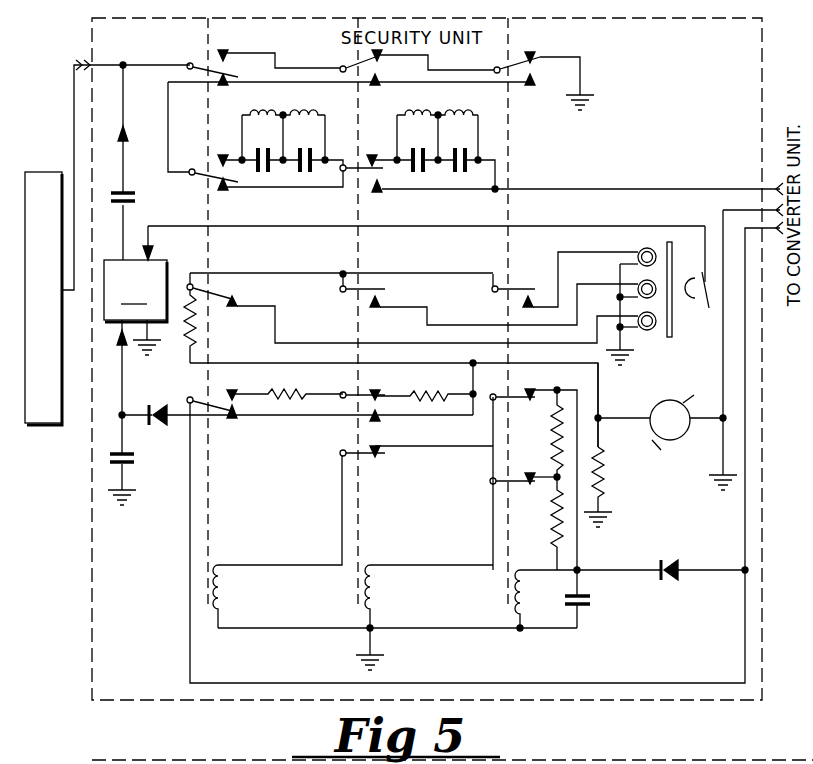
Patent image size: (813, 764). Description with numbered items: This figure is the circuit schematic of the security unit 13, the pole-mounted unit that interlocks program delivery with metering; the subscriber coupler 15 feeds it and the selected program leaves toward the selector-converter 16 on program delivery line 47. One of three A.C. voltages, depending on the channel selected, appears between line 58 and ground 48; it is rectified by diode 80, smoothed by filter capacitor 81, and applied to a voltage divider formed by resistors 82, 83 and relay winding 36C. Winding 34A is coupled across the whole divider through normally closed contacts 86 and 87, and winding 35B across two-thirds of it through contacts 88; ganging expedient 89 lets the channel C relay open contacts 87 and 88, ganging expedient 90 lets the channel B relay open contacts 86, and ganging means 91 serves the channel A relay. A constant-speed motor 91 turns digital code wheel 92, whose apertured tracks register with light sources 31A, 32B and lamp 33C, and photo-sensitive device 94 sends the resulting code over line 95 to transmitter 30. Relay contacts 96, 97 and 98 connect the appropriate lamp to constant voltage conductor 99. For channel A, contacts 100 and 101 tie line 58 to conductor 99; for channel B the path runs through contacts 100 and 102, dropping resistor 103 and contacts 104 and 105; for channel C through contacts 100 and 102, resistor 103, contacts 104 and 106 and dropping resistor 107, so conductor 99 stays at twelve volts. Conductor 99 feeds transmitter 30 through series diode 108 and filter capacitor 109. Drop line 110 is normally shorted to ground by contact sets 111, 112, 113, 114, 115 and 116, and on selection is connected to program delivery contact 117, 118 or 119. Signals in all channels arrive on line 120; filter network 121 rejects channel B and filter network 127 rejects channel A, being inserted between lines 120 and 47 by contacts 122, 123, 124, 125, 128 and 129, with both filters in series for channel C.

The security unit 13 is at (92, 41).
The coupler 15 is at (54, 424).
The selector-converter 16 is at (185, 760).
The transmitter 30 is at (135, 291).
The light source 31A is at (655, 330).
The light source 32B is at (620, 271).
The lamp 33C is at (640, 250).
The relay winding 34A is at (228, 590).
The relay winding 35B is at (380, 590).
The relay winding 36C is at (530, 592).
The program delivery line 47 is at (640, 189).
The ground 48 is at (585, 97).
The line 58 is at (190, 630).
The diode 80 is at (658, 577).
The filter capacitor 81 is at (588, 606).
The resistor 82 is at (555, 430).
The resistor 83 is at (555, 520).
The normally closed contacts 86 is at (372, 456).
The normally closed contacts 87 is at (530, 392).
The contacts 88 is at (534, 481).
The ganging expedient 89 is at (505, 462).
The ganging expedient 90 is at (361, 513).
The constant-speed motor 91 is at (672, 402).
The digital code wheel 92 is at (673, 330).
The photo-sensitive device 94 is at (697, 300).
The line 95 is at (283, 228).
The relay contacts 96 is at (222, 296).
The relay contacts 97 is at (370, 290).
The relay contacts 98 is at (514, 290).
The constant voltage conductor 99 is at (232, 362).
The contact 100 is at (212, 408).
The contact 101 is at (238, 411).
The contact 102 is at (230, 393).
The dropping resistor 103 is at (285, 396).
The contact 104 is at (346, 394).
The contact 105 is at (386, 420).
The contact 106 is at (371, 394).
The dropping resistor 107 is at (430, 396).
The series diode 108 is at (140, 412).
The filter capacitor 109 is at (133, 469).
The drop line 110 is at (106, 65).
The moving contact 111 is at (194, 62).
The contact 112 is at (225, 52).
The moving contact 113 is at (340, 66).
The contact 114 is at (382, 56).
The moving contact 115 is at (528, 60).
The contact 116 is at (538, 58).
The program delivery contact 117 is at (228, 95).
The program delivery contact 118 is at (378, 84).
The program delivery contact 119 is at (358, 95).
The line 120 is at (168, 100).
The filter network 121 is at (458, 133).
The normally closed contacts 122 is at (366, 176).
The normally closed contacts 123 is at (373, 154).
The contacts 124 is at (212, 177).
The normally open contacts 125 is at (228, 190).
The filter network 127 is at (312, 133).
The normally closed contacts 128 is at (226, 152).
The normally open contacts 129 is at (378, 193).